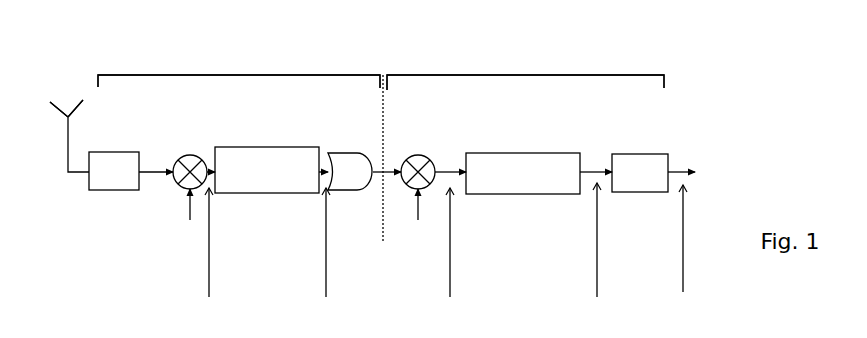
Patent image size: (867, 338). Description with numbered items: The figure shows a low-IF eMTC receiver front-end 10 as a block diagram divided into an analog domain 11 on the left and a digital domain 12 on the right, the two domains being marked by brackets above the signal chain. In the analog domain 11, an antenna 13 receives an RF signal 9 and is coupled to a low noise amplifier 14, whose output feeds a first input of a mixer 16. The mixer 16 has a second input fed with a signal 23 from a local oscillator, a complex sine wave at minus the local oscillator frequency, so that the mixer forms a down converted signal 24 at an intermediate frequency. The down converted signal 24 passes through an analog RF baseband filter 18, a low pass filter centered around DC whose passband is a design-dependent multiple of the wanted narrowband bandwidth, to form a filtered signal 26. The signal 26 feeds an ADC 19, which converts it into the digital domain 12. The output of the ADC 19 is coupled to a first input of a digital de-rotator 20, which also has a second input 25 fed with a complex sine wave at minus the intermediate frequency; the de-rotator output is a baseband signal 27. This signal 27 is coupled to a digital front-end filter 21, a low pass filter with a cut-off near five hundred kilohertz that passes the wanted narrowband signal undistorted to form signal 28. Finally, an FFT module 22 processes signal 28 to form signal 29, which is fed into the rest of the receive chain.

The RF signal 9 is at (68, 93).
The low-IF eMTC receiver front-end 10 is at (700, 70).
The analog domain 11 is at (238, 75).
The digital domain 12 is at (523, 75).
The antenna 13 is at (64, 136).
The low noise amplifier 14 is at (131, 171).
The mixer 16 is at (194, 161).
The analog RF baseband filter 18 is at (271, 170).
The ADC 19 is at (364, 171).
The digital de-rotator 20 is at (433, 157).
The digital front-end filter 21 is at (539, 173).
The FFT module 22 is at (653, 173).
The local oscillator signal 23 is at (183, 221).
The down converted signal 24 is at (205, 253).
The second input of the digital de-rotator 25 is at (412, 219).
The filtered signal 26 is at (325, 253).
The baseband signal 27 is at (449, 255).
The filtered digital signal 28 is at (598, 250).
The FFT output signal 29 is at (681, 251).